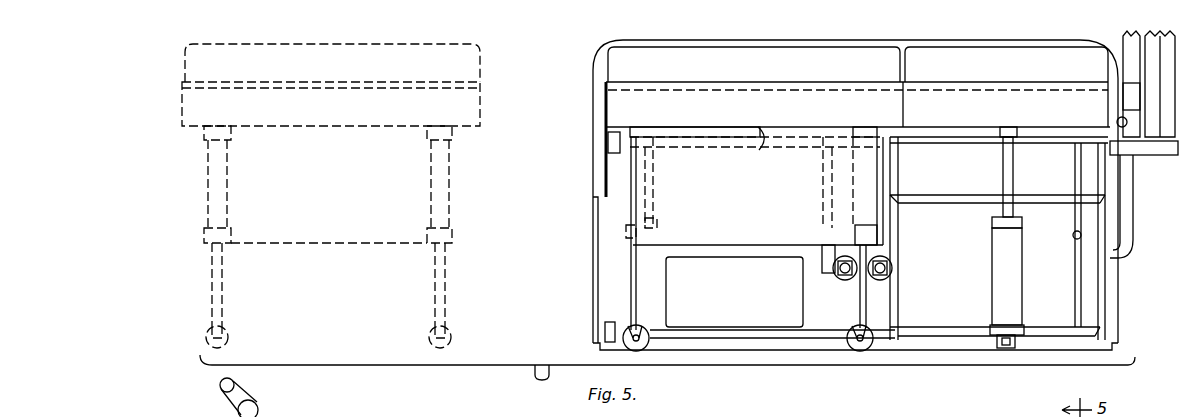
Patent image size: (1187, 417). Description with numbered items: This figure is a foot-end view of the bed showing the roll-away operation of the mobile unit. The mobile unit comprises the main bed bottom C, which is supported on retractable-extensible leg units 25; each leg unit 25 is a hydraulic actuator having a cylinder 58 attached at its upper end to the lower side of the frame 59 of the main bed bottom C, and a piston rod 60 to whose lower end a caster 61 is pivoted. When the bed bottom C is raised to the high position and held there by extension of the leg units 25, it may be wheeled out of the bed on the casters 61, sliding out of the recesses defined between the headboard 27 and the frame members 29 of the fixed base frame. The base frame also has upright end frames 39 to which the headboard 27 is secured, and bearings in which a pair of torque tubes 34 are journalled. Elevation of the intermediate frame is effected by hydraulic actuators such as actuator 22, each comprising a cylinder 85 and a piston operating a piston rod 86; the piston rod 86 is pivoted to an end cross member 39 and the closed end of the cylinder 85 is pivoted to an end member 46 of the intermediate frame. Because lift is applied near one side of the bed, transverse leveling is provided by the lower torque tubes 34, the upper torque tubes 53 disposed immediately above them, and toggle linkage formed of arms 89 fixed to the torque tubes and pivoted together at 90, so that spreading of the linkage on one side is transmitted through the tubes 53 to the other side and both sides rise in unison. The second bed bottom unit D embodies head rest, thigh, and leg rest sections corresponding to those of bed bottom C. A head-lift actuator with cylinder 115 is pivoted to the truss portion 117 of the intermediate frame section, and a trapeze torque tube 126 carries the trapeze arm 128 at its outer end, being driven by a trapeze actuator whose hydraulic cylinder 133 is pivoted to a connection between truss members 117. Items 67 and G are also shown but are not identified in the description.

The hydraulic actuator 22 is at (985, 299).
The retractable leg unit 25 is at (230, 190).
The headboard 27 is at (826, 40).
The frame member 29 is at (760, 352).
The torque tube 34 is at (749, 328).
The upright end frame 39 is at (950, 201).
The end member 46 is at (952, 116).
The upper torque tube 53 is at (950, 147).
The cylinder 58 is at (658, 217).
The frame 59 is at (762, 142).
The piston rod 60 is at (223, 285).
The caster 61 is at (229, 338).
The pulley 67 is at (462, 414).
The cylinder 85 is at (991, 266).
The piston rod 86 is at (1002, 178).
The arm 89 is at (630, 269).
The pivot 90 is at (628, 232).
The cylinder 115 is at (840, 279).
The truss portion 117 is at (822, 258).
The trapeze torque tube 126 is at (1115, 124).
The trapeze arm 128 is at (1148, 32).
The hydraulic cylinder 133 is at (888, 286).
The main bed bottom C is at (174, 110).
The bed bottom unit D is at (1013, 74).
The cable G is at (229, 404).